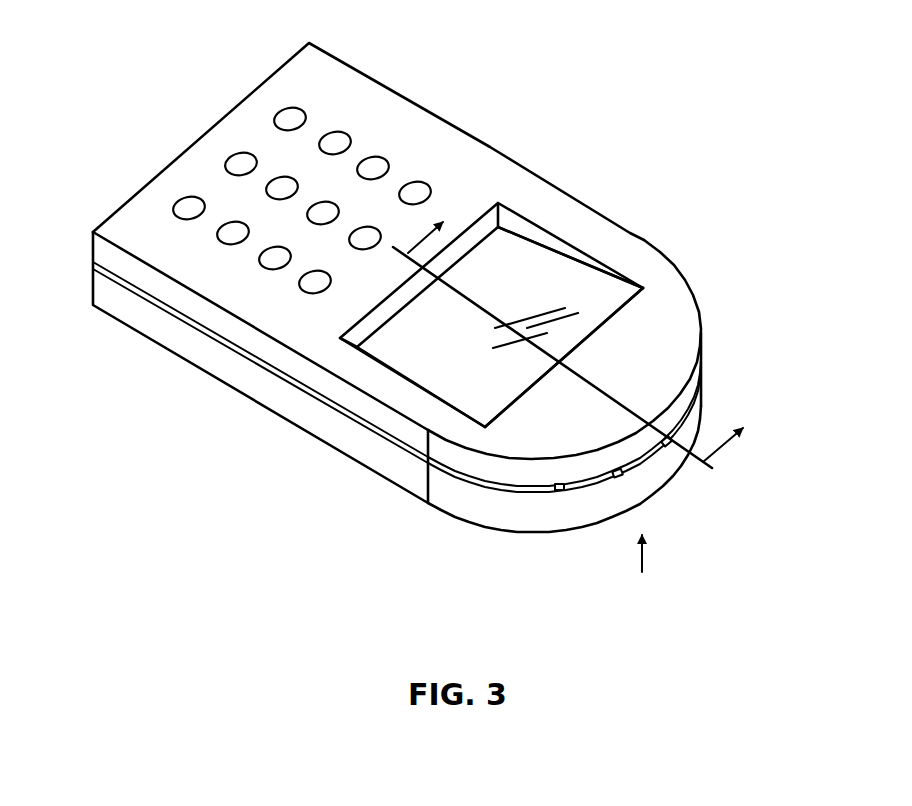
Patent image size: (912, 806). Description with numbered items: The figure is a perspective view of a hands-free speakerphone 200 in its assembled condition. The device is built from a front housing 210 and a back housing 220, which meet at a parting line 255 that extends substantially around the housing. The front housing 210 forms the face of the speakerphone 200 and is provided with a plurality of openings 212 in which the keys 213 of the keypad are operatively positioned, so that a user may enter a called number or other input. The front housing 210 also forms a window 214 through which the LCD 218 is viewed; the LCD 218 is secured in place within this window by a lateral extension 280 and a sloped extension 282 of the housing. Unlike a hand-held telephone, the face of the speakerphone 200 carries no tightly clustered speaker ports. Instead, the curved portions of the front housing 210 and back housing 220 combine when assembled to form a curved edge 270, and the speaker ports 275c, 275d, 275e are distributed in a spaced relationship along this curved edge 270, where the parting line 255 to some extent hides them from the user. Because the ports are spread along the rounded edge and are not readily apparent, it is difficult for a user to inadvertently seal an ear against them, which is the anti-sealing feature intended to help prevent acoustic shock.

The hands-free speakerphone 200 is at (439, 315).
The front housing 210 is at (360, 241).
The openings 212 is at (266, 277).
The keys 213 is at (181, 228).
The window 214 is at (613, 318).
The LCD 218 is at (587, 280).
The back housing 220 is at (307, 433).
The parting line 255 is at (478, 490).
The curved edge 270 is at (641, 569).
The speaker port 275c is at (667, 446).
The speaker port 275d is at (618, 478).
The speaker port 275e is at (560, 492).
The lateral extension 280 is at (480, 232).
The sloped extension 282 is at (527, 228).